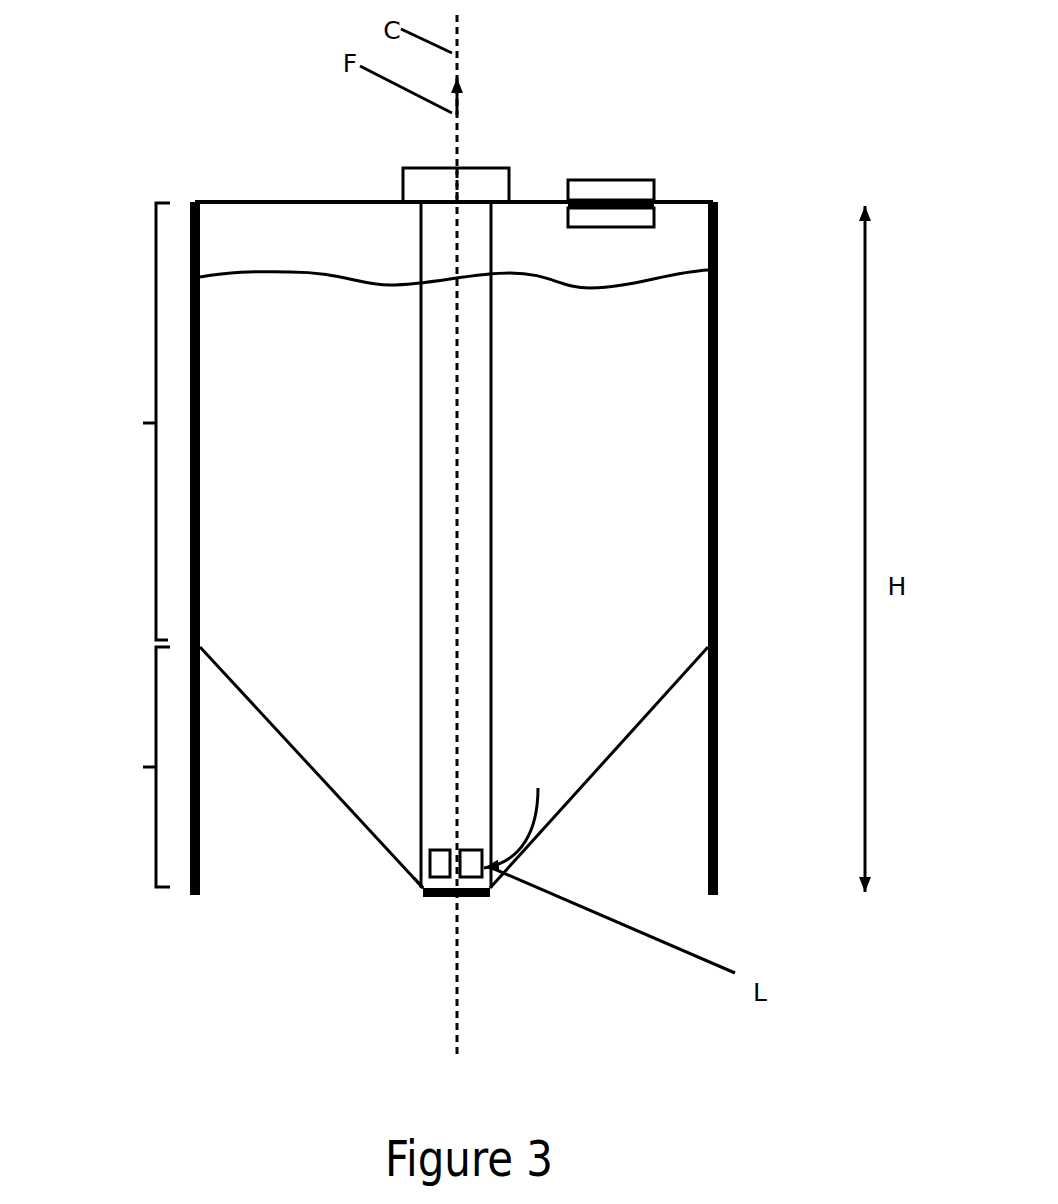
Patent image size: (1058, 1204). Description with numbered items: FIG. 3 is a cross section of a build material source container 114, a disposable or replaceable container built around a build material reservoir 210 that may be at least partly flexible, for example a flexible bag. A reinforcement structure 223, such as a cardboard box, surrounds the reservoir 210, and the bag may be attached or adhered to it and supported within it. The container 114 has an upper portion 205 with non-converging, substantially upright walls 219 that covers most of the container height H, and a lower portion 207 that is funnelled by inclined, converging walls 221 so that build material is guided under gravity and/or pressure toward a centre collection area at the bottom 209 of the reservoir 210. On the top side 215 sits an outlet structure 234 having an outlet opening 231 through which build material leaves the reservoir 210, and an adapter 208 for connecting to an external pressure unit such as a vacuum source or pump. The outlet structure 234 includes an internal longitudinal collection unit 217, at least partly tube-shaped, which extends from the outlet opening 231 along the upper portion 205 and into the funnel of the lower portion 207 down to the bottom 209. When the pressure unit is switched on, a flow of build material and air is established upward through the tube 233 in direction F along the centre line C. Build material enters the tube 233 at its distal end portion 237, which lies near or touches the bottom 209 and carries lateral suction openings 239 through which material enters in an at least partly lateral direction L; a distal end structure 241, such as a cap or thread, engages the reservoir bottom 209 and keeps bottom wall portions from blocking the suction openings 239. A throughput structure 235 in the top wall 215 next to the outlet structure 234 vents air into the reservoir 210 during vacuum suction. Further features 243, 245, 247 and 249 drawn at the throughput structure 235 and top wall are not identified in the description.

The build material source container 114 is at (757, 142).
The upper portion 205 is at (134, 421).
The lower portion 207 is at (134, 767).
The adapter 208 is at (487, 167).
The bottom 209 is at (467, 900).
The build material reservoir 210 is at (584, 498).
The top side 215 is at (287, 167).
The collection unit 217 is at (418, 570).
The walls 219 is at (719, 394).
The converging walls 221 is at (322, 785).
The reinforcement structure 223 is at (719, 747).
The outlet opening 231 is at (430, 185).
The tube 233 is at (481, 666).
The outlet structure 234 is at (503, 163).
The throughput structure 235 is at (643, 170).
The distal end portion 237 is at (413, 878).
The suction opening 239 is at (437, 872).
The distal end structure 241 is at (488, 880).
The seal 243 is at (637, 200).
The top wall 245 is at (653, 203).
The lower flange 247 is at (653, 220).
The upper flange 249 is at (587, 192).